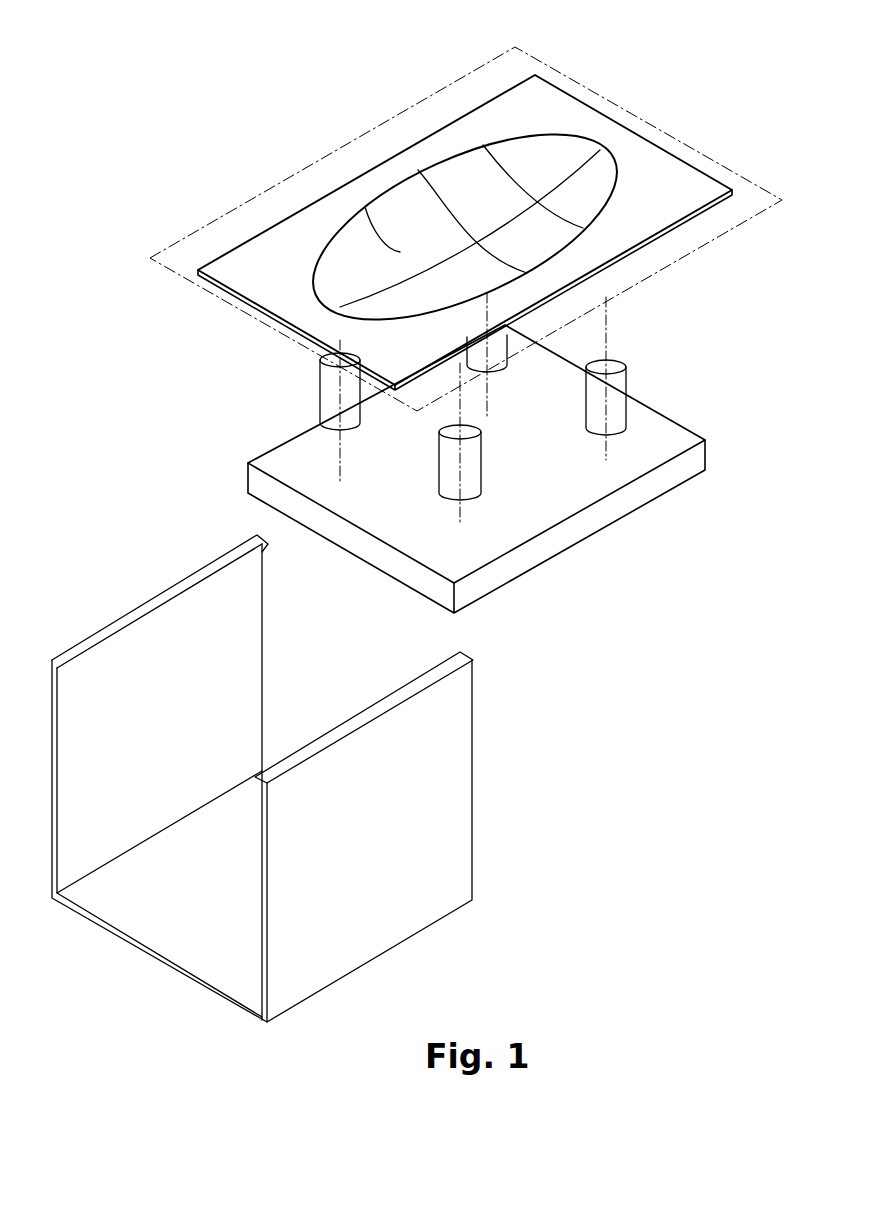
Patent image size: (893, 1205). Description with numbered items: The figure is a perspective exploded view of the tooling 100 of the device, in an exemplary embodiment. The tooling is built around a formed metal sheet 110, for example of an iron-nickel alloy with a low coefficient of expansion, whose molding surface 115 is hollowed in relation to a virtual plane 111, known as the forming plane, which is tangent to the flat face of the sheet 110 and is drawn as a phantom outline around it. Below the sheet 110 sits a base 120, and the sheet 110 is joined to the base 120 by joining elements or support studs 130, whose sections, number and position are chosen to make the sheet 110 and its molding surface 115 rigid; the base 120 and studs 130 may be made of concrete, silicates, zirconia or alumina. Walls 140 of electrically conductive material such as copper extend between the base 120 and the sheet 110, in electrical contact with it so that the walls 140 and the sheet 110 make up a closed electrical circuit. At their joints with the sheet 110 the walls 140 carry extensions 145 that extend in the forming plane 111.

The antenna assembly 100 is at (180, 137).
The formed metal sheet 110 is at (230, 248).
The virtual plane 111 is at (465, 73).
The molding surface 115 is at (400, 253).
The base 120 is at (298, 435).
The support studs 130 is at (625, 375).
The walls 140 is at (397, 795).
The extensions 145 is at (392, 698).